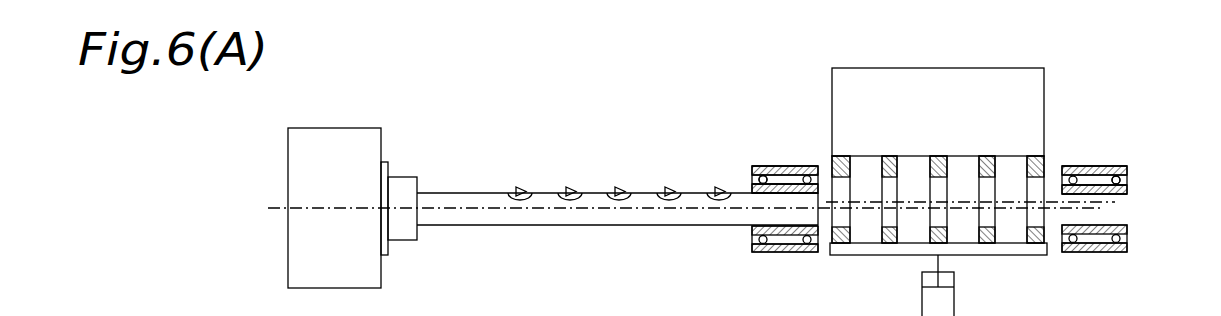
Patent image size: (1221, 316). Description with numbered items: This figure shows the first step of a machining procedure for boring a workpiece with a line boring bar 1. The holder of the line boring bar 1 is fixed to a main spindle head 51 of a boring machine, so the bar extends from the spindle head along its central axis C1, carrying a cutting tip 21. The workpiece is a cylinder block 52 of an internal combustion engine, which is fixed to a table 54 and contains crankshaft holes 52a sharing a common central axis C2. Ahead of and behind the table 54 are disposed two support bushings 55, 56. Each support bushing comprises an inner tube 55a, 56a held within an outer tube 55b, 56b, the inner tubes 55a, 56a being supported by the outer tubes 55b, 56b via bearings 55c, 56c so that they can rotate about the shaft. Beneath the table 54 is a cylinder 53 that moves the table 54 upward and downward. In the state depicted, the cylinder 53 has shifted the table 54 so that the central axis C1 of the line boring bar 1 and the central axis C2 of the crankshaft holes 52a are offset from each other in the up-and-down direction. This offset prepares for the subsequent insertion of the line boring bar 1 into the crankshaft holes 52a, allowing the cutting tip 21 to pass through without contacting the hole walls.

The line boring bar 1 is at (621, 162).
The cutting tip 21 is at (517, 187).
The main spindle head 51 is at (338, 146).
The cylinder block 52 is at (1054, 70).
The crankshaft holes 52a is at (848, 184).
The cylinder 53 is at (950, 300).
The table 54 is at (1022, 255).
The support bushing 55 is at (759, 143).
The inner tube 55a is at (752, 188).
The outer tube 55b is at (805, 166).
The bearings 55c is at (766, 176).
The support bushing 56 is at (1106, 145).
The inner tube 56a is at (1125, 188).
The outer tube 56b is at (1117, 173).
The bearings 56c is at (1120, 181).
The central axis of the line boring bar C1 is at (456, 208).
The central axis of the crankshaft holes C2 is at (1012, 202).